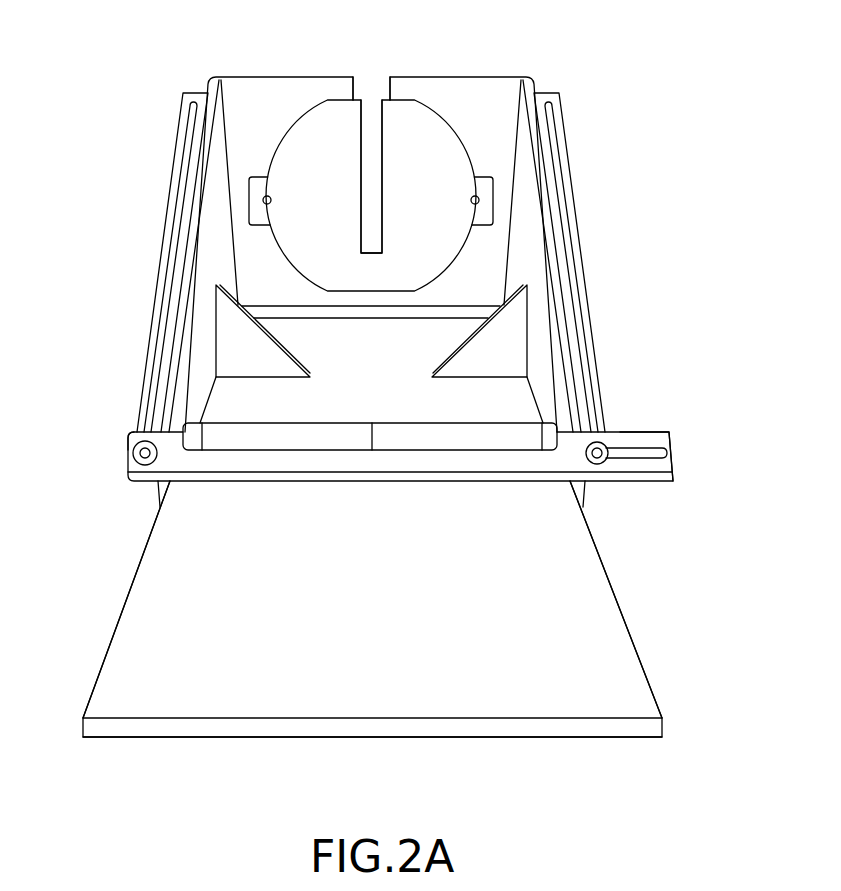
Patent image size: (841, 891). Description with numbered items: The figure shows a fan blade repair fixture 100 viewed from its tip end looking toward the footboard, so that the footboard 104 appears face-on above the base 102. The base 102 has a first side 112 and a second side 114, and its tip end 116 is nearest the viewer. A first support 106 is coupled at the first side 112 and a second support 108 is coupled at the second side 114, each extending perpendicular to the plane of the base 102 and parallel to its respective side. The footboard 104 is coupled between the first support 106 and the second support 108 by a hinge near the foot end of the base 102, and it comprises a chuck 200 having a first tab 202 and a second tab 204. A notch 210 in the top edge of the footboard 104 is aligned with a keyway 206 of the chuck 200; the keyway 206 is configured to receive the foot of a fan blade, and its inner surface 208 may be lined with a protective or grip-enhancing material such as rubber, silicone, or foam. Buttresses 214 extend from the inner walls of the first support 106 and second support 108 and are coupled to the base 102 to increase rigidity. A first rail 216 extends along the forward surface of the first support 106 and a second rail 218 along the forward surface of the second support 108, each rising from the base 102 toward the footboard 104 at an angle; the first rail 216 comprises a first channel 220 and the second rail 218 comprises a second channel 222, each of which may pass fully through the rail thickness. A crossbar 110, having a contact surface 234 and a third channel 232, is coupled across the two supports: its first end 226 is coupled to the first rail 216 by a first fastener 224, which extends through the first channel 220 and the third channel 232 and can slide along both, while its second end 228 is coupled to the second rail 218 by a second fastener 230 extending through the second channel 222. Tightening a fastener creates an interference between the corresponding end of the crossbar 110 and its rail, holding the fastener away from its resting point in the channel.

The fixture 100 is at (609, 49).
The base 102 is at (381, 654).
The footboard 104 is at (504, 124).
The first support 106 is at (609, 256).
The second support 108 is at (133, 256).
The crossbar 110 is at (443, 461).
The first side 112 is at (624, 619).
The second side 114 is at (118, 618).
The tip end 116 is at (537, 722).
The chuck 200 is at (432, 212).
The first tab 202 is at (476, 205).
The second tab 204 is at (266, 205).
The keyway 206 is at (373, 152).
The inner surface 208 is at (361, 183).
The notch 210 is at (372, 98).
The buttresses 214 is at (261, 363).
The first rail 216 is at (556, 275).
The second rail 218 is at (163, 277).
The first channel 220 is at (580, 363).
The second channel 222 is at (162, 356).
The first fastener 224 is at (602, 463).
The first end 226 is at (655, 437).
The second end 228 is at (134, 440).
The second fastener 230 is at (133, 456).
The third channel 232 is at (668, 452).
The contact surface 234 is at (415, 440).